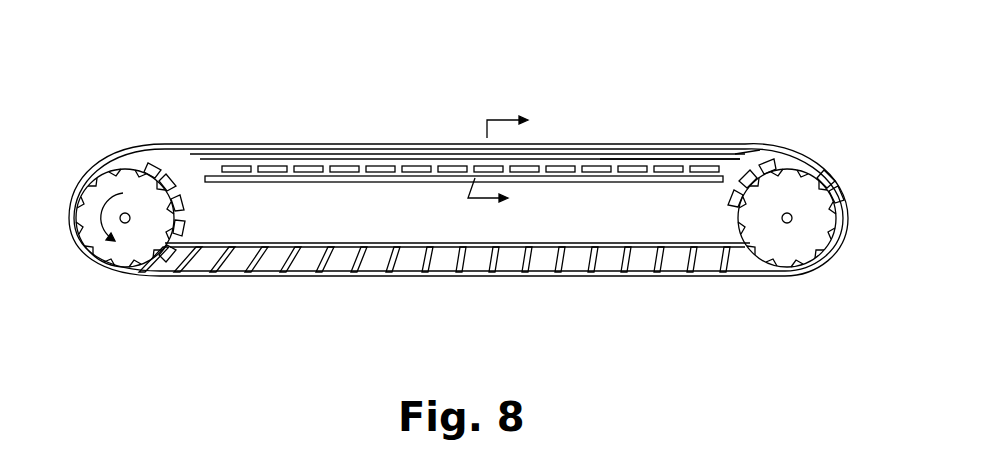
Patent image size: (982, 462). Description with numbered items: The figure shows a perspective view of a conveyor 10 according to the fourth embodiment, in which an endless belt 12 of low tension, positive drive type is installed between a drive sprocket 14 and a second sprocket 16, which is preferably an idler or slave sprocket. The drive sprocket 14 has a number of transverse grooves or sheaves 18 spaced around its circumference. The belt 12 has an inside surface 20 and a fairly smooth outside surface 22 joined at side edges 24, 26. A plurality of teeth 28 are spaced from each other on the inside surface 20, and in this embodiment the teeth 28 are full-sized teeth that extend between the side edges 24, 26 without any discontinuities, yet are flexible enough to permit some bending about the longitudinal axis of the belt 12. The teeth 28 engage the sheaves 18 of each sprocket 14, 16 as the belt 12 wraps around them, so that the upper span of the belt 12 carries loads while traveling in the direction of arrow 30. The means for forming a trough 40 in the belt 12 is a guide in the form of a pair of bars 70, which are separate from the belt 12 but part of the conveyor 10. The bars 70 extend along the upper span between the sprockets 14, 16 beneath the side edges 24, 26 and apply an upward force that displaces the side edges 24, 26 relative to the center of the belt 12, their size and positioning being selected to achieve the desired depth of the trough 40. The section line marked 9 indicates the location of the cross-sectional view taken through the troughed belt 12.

The conveyor 10 is at (610, 67).
The endless belt 12 is at (284, 143).
The drive sprocket 14 is at (140, 245).
The idler sprocket 16 is at (800, 245).
The sheaves 18 is at (185, 203).
The inside surface 20 is at (620, 274).
The outside surface 22 is at (601, 152).
The side edge 24 is at (392, 145).
The side edge 26 is at (352, 163).
The teeth 28 is at (362, 275).
The arrow 30 is at (103, 216).
The trough 40 is at (677, 158).
The bars 70 is at (297, 180).
The section line 9- 9 is at (498, 157).